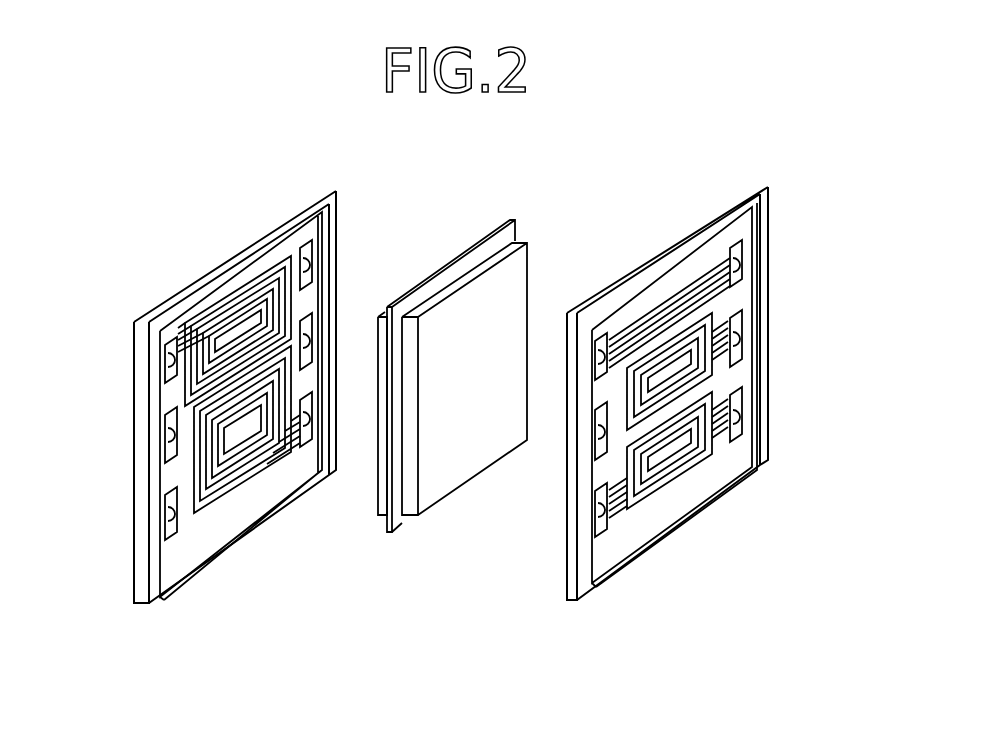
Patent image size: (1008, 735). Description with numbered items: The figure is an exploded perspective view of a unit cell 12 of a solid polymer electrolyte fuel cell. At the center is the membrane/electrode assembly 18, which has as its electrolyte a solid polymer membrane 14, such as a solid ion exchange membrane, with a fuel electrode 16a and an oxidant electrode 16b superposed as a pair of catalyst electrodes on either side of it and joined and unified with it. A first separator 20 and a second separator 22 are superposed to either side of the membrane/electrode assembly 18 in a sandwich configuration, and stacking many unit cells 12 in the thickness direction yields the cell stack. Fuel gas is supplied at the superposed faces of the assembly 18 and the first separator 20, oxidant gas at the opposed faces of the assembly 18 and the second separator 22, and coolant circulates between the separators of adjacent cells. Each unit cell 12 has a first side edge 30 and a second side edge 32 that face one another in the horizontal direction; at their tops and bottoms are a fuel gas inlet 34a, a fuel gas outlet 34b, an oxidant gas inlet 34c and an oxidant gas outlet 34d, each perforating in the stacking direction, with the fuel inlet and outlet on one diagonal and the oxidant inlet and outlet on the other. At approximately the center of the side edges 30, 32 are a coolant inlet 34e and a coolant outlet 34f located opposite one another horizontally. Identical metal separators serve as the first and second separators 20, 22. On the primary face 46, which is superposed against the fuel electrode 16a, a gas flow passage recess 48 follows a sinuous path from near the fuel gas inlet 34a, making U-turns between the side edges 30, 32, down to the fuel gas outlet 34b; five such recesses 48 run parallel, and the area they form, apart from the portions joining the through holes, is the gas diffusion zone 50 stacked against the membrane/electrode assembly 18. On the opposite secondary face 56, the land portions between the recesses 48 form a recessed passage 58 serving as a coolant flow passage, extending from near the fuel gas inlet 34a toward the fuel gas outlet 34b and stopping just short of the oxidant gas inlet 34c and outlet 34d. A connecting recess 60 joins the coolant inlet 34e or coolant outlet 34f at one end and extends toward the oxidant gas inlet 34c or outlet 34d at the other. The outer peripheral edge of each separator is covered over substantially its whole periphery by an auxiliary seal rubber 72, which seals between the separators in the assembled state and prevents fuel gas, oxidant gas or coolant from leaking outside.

The unit cell 12 is at (699, 363).
The solid polymer membrane 14 is at (431, 394).
The fuel electrode 16a is at (378, 498).
The oxidant electrode 16b is at (465, 462).
The membrane/electrode assembly 18 is at (460, 250).
The first separator 20 is at (236, 397).
The second separator 22 is at (699, 393).
The first side edge 30 is at (126, 425).
The second side edge 32 is at (312, 298).
The fuel gas inlet 34a is at (165, 365).
The fuel gas outlet 34b is at (307, 415).
The oxidant gas inlet 34c is at (310, 262).
The oxidant gas outlet 34d is at (167, 530).
The coolant inlet 34e is at (165, 447).
The coolant outlet 34f is at (310, 343).
The primary face 46 is at (266, 494).
The gas flow passage recess 48 is at (247, 288).
The gas diffusion zone 50 is at (190, 515).
The secondary face 56 is at (706, 478).
The recessed passage 58 is at (675, 293).
The connecting recess 60 is at (735, 380).
The auxiliary seal rubber 72 is at (329, 220).